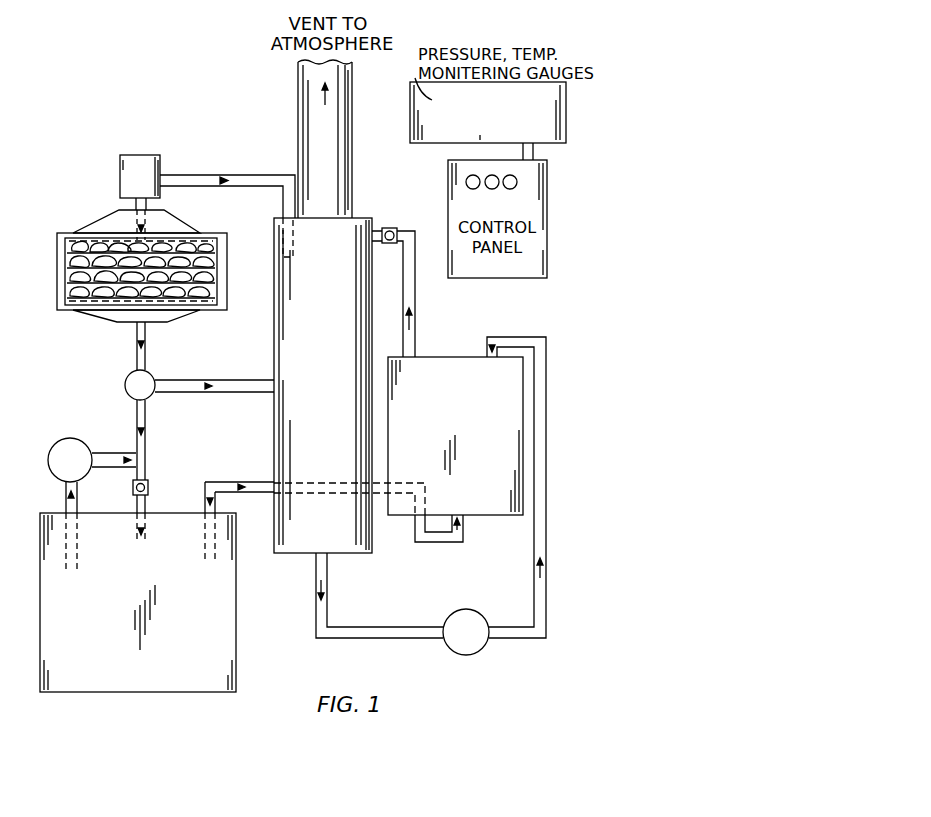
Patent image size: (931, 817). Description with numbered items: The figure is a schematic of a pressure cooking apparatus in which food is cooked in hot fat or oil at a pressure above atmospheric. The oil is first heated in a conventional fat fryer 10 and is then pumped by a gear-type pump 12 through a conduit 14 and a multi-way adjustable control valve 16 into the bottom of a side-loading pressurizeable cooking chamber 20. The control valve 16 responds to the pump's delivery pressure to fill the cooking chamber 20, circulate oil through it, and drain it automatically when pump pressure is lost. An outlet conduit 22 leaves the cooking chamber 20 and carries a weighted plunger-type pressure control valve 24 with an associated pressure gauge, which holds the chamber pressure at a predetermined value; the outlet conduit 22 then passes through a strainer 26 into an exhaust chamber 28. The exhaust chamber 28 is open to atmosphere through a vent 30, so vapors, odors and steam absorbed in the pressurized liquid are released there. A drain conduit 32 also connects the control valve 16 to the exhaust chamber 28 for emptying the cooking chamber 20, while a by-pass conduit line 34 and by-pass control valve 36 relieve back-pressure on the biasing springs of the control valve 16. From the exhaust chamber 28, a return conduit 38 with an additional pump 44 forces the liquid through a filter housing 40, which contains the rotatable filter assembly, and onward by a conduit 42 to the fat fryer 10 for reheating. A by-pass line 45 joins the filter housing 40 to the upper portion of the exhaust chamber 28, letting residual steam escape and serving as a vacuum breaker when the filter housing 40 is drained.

The fat fryer 10 is at (106, 617).
The pump 12 is at (82, 472).
The conduit 14 is at (146, 361).
The multi-way adjustable control valve 16 is at (126, 388).
The pressurizeable cooking chamber 20 is at (217, 316).
The outlet conduit 22 is at (219, 174).
The pressure control valve 24 is at (140, 157).
The strainer 26 is at (298, 236).
The exhaust chamber 28 is at (333, 333).
The vent 30 is at (338, 143).
The drain conduit 32 is at (245, 390).
The by-pass conduit line 34 is at (149, 508).
The by-pass control valve 36 is at (151, 479).
The return conduit 38 is at (547, 577).
The filter housing 40 is at (470, 413).
The conduit 42 is at (440, 541).
The additional pump 44 is at (457, 619).
The by-pass line 45 is at (418, 333).